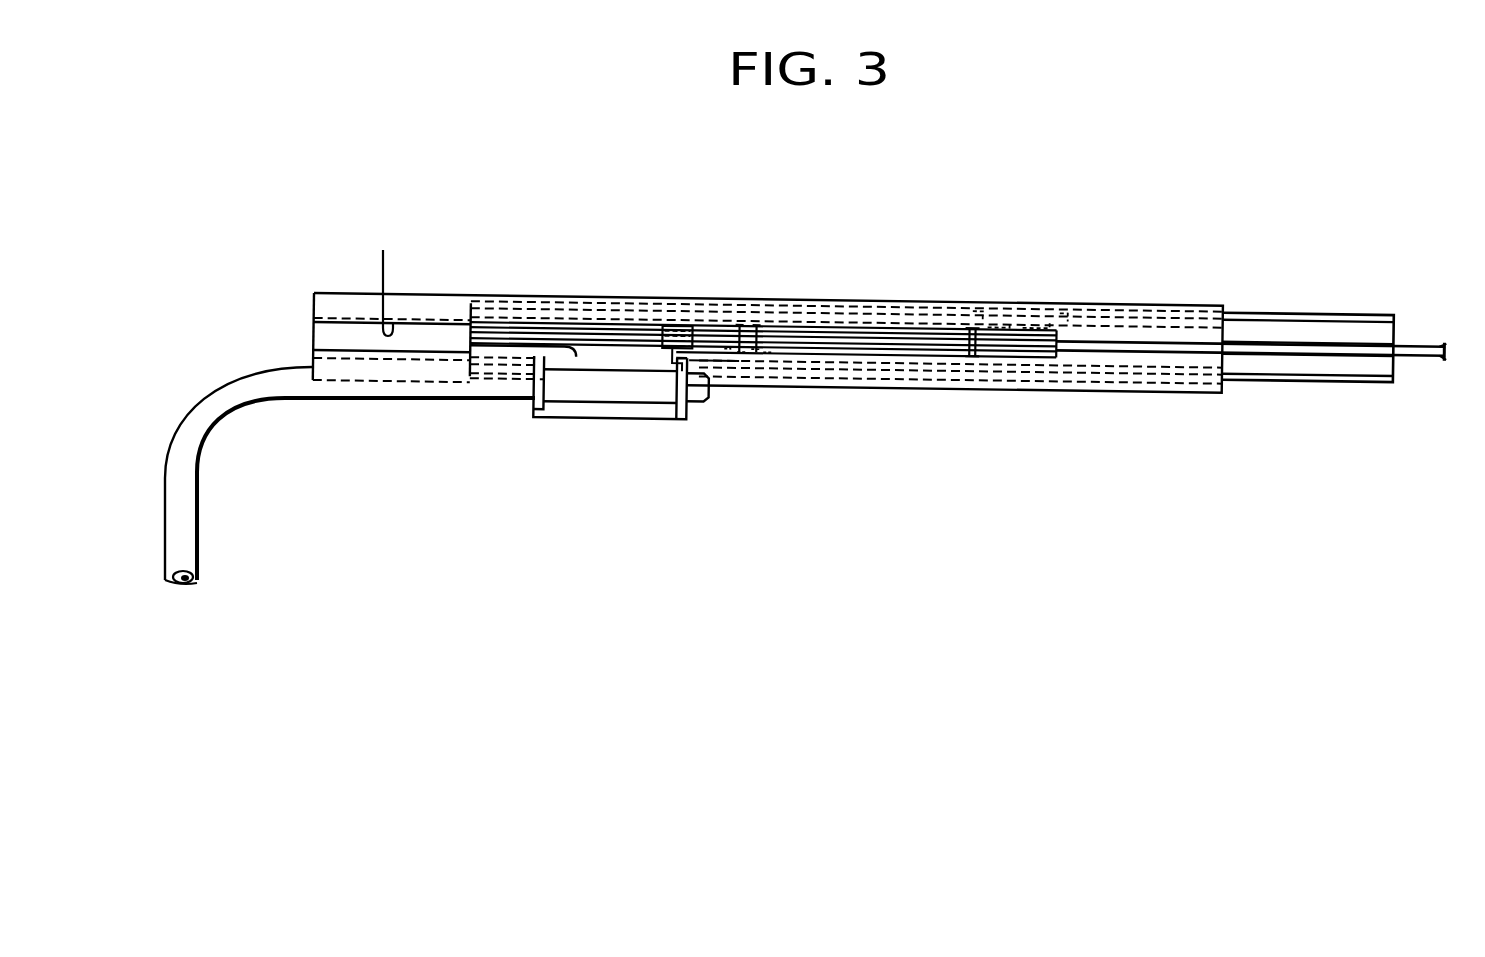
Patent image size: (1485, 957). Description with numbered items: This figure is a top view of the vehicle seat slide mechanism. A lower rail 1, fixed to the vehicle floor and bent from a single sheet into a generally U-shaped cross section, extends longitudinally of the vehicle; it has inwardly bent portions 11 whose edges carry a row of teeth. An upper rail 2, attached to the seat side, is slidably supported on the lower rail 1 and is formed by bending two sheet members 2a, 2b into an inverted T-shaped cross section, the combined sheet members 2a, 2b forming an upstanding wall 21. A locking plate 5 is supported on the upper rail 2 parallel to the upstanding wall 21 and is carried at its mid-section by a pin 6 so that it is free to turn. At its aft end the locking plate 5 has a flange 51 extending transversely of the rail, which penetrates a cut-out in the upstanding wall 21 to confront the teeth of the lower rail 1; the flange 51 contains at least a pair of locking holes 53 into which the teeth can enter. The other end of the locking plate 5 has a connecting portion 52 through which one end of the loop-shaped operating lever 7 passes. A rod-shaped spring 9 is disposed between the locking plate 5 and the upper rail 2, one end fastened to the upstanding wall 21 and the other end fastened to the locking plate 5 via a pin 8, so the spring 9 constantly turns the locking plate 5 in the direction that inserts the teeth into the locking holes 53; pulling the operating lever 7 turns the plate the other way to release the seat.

The lower rail 1 is at (960, 388).
The inwardly bent portion 11 is at (384, 277).
The upper rail 2 is at (1253, 312).
The sheet member 2a is at (1318, 385).
The sheet member 2b is at (1343, 320).
The upstanding wall 21 is at (1112, 353).
The locking plate 5 is at (813, 352).
The flange 51 is at (983, 312).
The connecting portion 52 is at (596, 415).
The locking hole 53 is at (1047, 322).
The pin 6 is at (739, 377).
The operating lever 7 is at (200, 447).
The pin 8 is at (950, 330).
The rod-shaped spring 9 is at (795, 325).